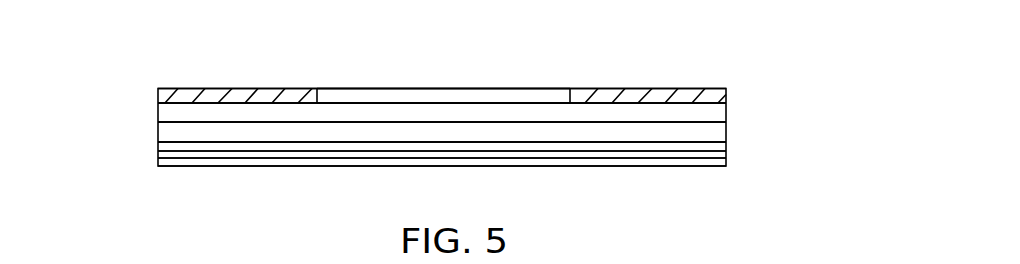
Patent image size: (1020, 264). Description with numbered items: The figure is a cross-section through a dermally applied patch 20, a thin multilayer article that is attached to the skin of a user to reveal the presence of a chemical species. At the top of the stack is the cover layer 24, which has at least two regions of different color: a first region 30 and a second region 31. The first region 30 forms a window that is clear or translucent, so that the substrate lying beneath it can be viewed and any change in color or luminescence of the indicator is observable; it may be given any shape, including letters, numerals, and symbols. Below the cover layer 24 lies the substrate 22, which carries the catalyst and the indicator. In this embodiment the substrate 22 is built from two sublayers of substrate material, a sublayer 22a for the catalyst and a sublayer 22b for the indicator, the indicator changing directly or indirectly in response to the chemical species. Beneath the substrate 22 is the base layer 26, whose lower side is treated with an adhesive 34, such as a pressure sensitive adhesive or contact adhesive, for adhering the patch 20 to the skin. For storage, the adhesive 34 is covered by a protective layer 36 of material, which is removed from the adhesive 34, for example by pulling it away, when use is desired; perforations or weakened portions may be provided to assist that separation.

The dermally applied patch 20 is at (762, 74).
The substrate 22 is at (158, 103).
The sublayer 22a is at (727, 139).
The sublayer 22b is at (727, 114).
The cover layer 24 is at (158, 97).
The base layer 26 is at (727, 148).
The first region 30 is at (607, 88).
The second region 31 is at (397, 88).
The adhesive 34 is at (158, 157).
The protective layer 36 is at (727, 163).